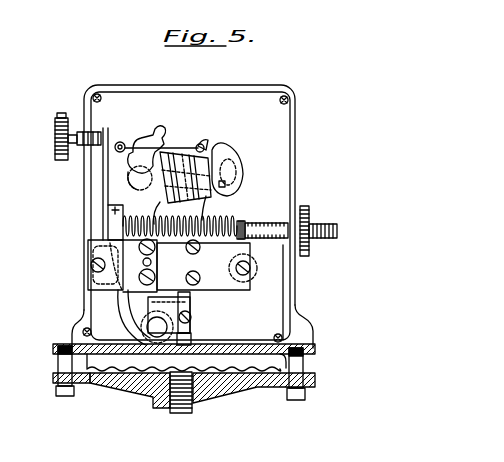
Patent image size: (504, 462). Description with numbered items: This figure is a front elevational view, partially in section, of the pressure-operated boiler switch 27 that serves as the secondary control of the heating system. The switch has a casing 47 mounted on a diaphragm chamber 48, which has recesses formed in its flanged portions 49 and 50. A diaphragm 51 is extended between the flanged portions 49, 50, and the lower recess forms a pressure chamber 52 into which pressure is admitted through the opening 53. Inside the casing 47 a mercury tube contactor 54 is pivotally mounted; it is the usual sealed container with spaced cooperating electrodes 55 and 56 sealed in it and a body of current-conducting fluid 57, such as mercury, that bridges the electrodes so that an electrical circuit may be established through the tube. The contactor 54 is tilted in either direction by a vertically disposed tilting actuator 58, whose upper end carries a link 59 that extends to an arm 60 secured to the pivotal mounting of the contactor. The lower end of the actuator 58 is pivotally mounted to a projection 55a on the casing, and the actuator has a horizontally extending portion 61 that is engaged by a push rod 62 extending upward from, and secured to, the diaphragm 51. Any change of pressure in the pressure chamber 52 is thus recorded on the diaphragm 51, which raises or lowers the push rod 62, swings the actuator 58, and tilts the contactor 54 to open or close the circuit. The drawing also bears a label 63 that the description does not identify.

The pressure-operated boiler switch 27 is at (313, 123).
The casing 47 is at (297, 184).
The diaphragm chamber 48 is at (317, 355).
The flanged portion 49 is at (54, 350).
The flanged portion 50 is at (54, 375).
The diaphragm 51 is at (92, 386).
The pressure chamber 52 is at (130, 384).
The opening 53 is at (186, 412).
The mercury tube contactor 54 is at (128, 166).
The electrode 55 is at (226, 206).
The projection 55a is at (130, 318).
The electrode 56 is at (226, 185).
The current-conducting fluid 57 is at (240, 170).
The tilting actuator 58 is at (125, 190).
The link 59 is at (180, 141).
The arm 60 is at (204, 150).
The horizontally extending portion 61 is at (192, 316).
The push rod 62 is at (194, 338).
The adjusting rod 63 is at (287, 231).